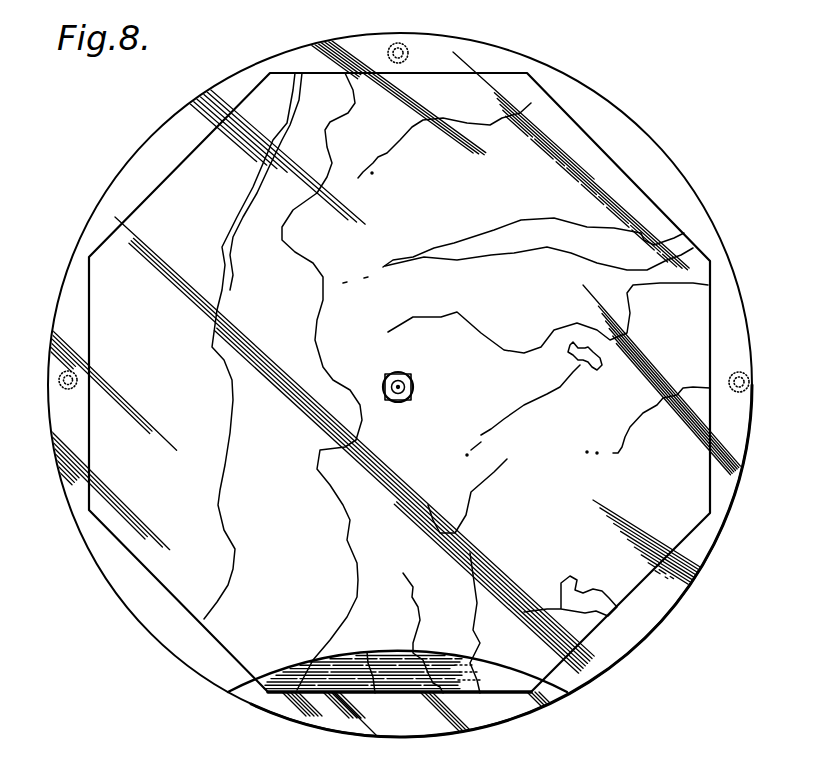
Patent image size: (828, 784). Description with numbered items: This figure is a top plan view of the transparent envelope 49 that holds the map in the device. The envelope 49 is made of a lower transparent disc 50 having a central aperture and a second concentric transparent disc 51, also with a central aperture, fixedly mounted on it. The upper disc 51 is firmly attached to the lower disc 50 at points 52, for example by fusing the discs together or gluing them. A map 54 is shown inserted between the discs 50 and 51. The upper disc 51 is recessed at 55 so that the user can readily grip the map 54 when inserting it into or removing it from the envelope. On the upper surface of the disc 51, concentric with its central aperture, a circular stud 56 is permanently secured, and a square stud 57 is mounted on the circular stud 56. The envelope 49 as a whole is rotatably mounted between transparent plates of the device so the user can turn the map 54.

The transparent envelope 49 is at (141, 142).
The transparent disc 50 is at (511, 708).
The second concentric transparent disc 51 is at (632, 139).
The points 52 is at (427, 38).
The map 54 is at (468, 698).
The recess 55 is at (371, 693).
The circular stud 56 is at (413, 390).
The square stud 57 is at (410, 374).